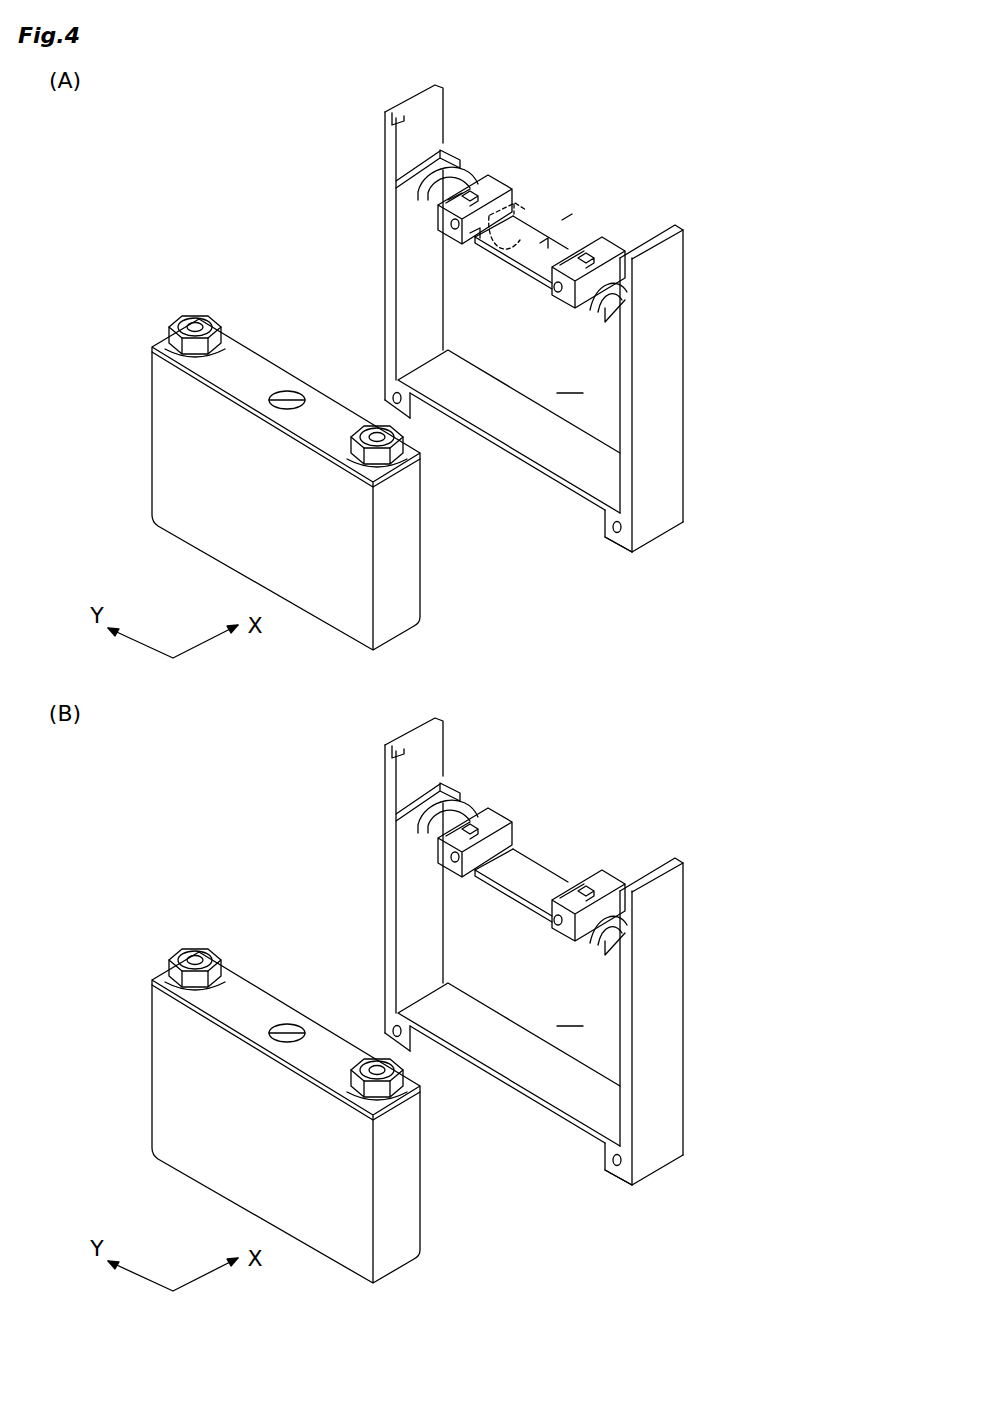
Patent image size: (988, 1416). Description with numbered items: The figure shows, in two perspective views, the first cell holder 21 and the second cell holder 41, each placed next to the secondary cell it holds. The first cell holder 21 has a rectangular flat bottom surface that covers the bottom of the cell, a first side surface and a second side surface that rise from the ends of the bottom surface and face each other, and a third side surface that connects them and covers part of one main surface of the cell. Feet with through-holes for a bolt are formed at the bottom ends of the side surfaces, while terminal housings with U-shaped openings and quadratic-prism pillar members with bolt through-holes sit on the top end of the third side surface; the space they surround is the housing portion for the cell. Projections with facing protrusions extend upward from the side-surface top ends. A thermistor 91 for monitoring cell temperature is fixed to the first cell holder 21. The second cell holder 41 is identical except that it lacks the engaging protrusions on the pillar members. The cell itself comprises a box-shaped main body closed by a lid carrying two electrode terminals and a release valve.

The first cell holder 21 is at (695, 188).
The second cell holder 41 is at (532, 957).
The thermistor 91 is at (510, 254).